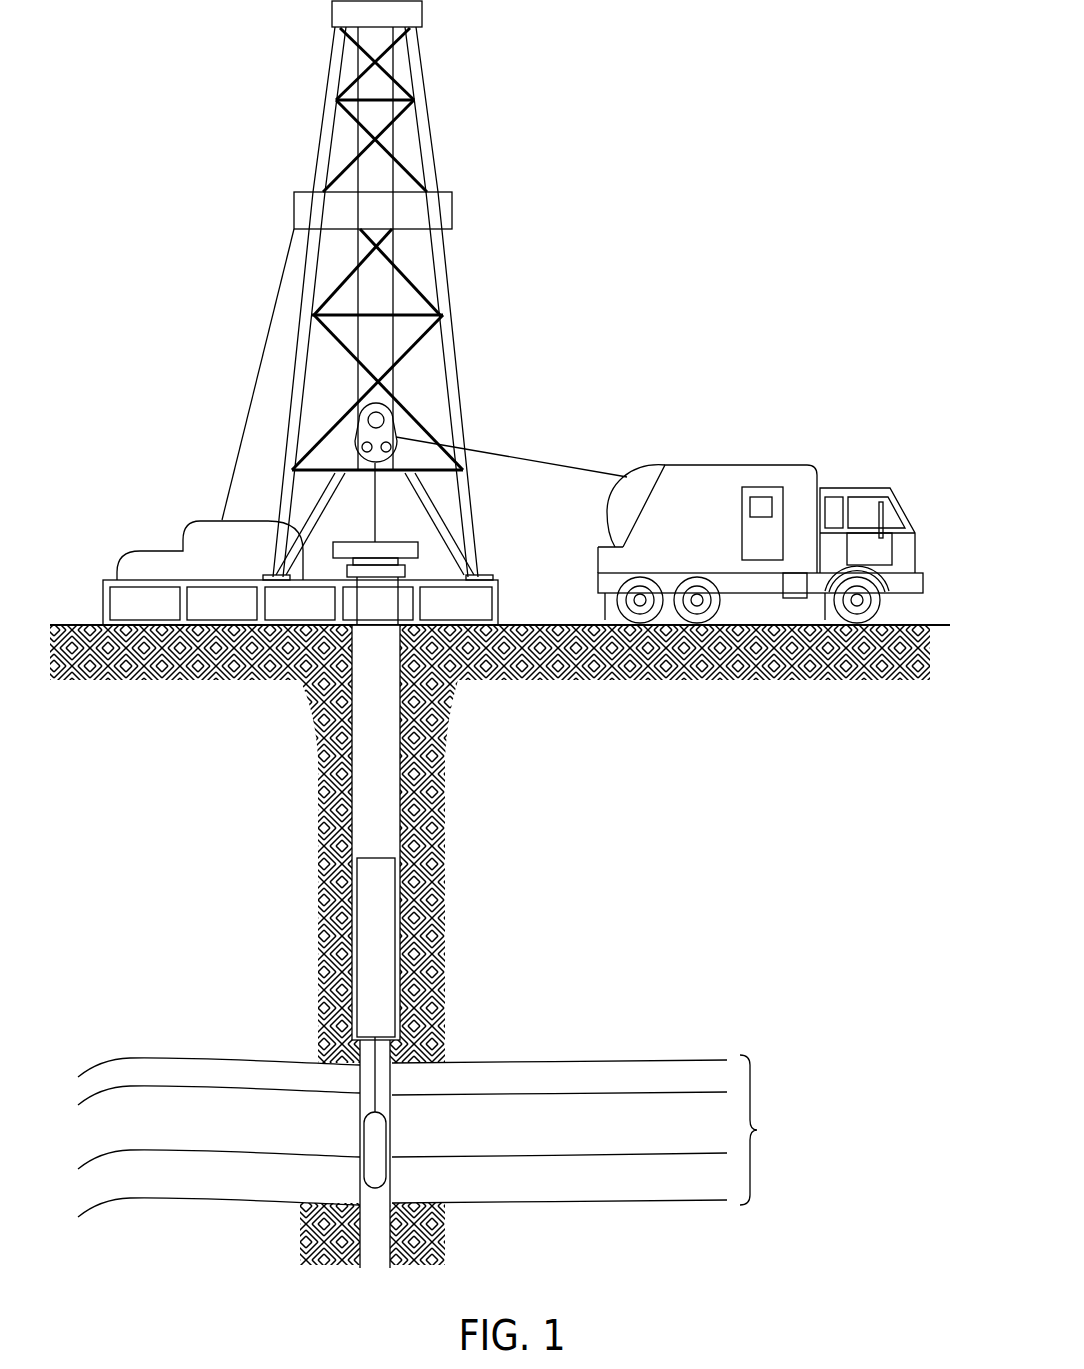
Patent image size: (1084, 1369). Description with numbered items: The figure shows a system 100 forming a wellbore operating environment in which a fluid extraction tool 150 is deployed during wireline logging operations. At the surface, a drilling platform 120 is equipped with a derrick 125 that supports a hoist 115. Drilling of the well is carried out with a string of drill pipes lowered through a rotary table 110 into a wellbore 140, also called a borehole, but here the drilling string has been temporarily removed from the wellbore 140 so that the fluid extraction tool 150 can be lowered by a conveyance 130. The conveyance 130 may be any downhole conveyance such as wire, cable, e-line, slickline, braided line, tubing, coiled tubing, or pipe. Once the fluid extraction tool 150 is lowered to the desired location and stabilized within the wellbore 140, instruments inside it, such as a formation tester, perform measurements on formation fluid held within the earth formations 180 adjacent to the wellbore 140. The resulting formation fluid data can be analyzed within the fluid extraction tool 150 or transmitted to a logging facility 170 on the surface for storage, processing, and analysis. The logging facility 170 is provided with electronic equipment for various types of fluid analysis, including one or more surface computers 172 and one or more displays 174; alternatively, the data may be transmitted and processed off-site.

The system 100 is at (624, 268).
The rotary table 110 is at (420, 540).
The hoist 115 is at (397, 425).
The drilling platform 120 is at (498, 608).
The derrick 125 is at (405, 566).
The conveyance 130 is at (580, 465).
The wellbore 140 is at (360, 1085).
The fluid extraction tool 150 is at (390, 1133).
The logging facility 170 is at (692, 465).
The surface computer 172 is at (762, 497).
The display 174 is at (738, 545).
The earth formations 180 is at (442, 1136).